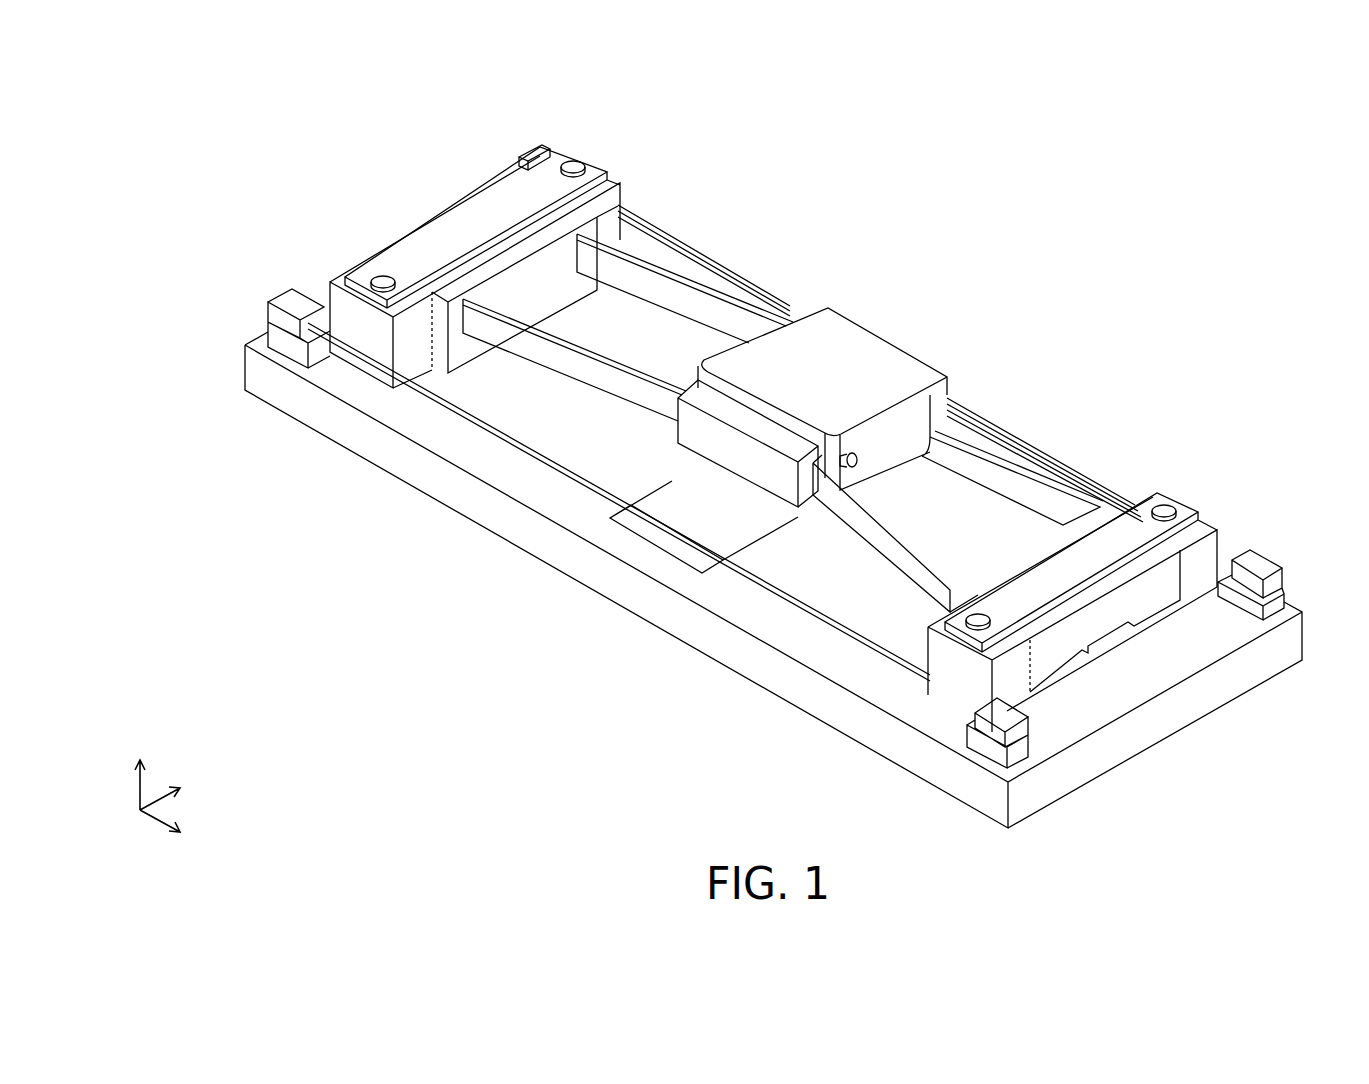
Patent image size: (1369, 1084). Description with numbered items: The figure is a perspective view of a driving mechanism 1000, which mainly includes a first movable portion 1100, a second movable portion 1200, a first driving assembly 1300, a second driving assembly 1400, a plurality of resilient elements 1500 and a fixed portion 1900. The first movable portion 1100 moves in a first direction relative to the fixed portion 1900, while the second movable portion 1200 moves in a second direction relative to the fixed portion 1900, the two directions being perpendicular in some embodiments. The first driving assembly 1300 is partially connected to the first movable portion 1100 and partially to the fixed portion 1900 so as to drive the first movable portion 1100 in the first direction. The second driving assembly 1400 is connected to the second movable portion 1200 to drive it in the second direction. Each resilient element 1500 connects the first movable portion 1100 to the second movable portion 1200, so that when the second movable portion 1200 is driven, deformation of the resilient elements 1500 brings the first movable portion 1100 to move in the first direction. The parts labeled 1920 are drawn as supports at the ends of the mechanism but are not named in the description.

The driving mechanism 1000 is at (190, 129).
The first movable portion 1100 is at (681, 437).
The second movable portion 1200 is at (327, 278).
The first driving assembly 1300 is at (845, 348).
The second driving assembly 1400 is at (759, 600).
The resilient elements 1500 is at (684, 266).
The fixed portion 1900 is at (791, 703).
The support assembly 1920 is at (491, 203).